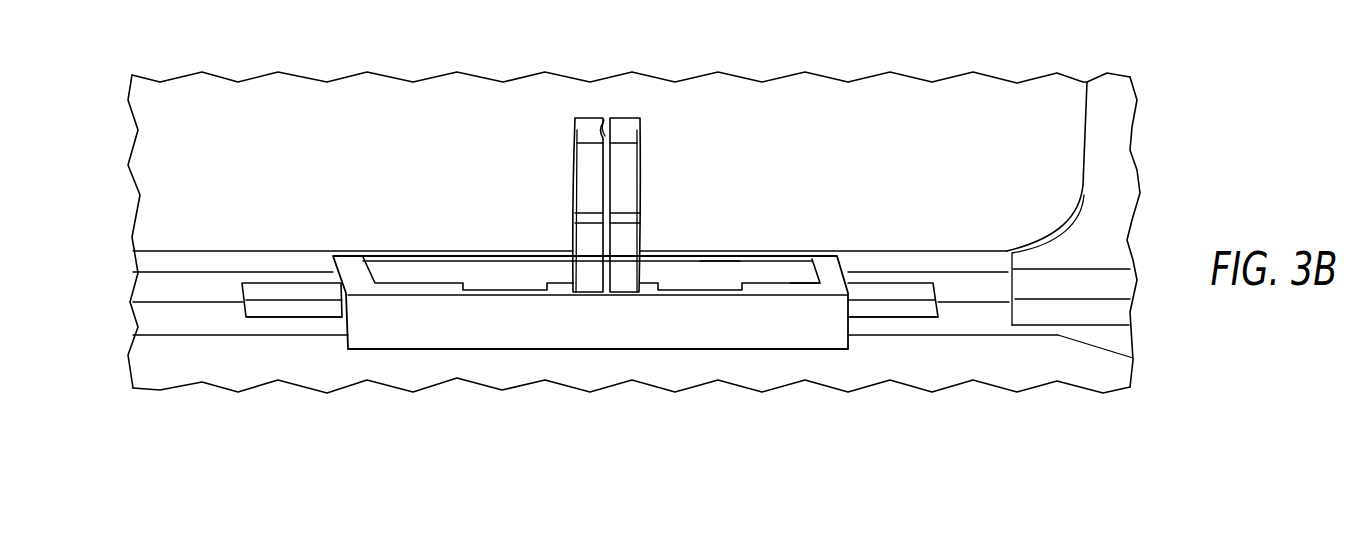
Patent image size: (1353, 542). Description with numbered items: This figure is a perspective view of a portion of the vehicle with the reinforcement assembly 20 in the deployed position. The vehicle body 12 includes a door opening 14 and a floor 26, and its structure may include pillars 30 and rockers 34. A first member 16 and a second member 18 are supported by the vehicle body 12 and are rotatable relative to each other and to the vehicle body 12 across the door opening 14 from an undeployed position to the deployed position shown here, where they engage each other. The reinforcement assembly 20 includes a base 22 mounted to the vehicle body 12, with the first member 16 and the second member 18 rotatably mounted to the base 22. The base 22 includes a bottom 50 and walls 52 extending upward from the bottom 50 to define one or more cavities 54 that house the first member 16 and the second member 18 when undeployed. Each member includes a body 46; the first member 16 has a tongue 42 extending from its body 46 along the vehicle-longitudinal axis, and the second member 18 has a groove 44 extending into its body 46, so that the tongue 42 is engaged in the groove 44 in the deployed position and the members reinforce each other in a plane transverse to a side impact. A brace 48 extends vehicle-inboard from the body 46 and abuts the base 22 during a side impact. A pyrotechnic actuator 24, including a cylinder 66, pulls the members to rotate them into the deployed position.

The vehicle body 12 is at (1067, 143).
The door opening 14 is at (1000, 196).
The first member 16 is at (762, 265).
The second member 18 is at (415, 263).
The reinforcement assembly 20 is at (481, 367).
The base 22 is at (383, 350).
The pyrotechnic actuator 24 is at (286, 283).
The floor 26 is at (210, 224).
The pillars 30 is at (1113, 122).
The rockers 34 is at (975, 317).
The tongue 42 is at (612, 128).
The groove 44 is at (599, 128).
The body 46 is at (588, 177).
The brace 48 is at (588, 243).
The bottom 50 is at (799, 273).
The walls 52 is at (768, 317).
The cavities 54 is at (722, 265).
The cylinder 66 is at (265, 318).